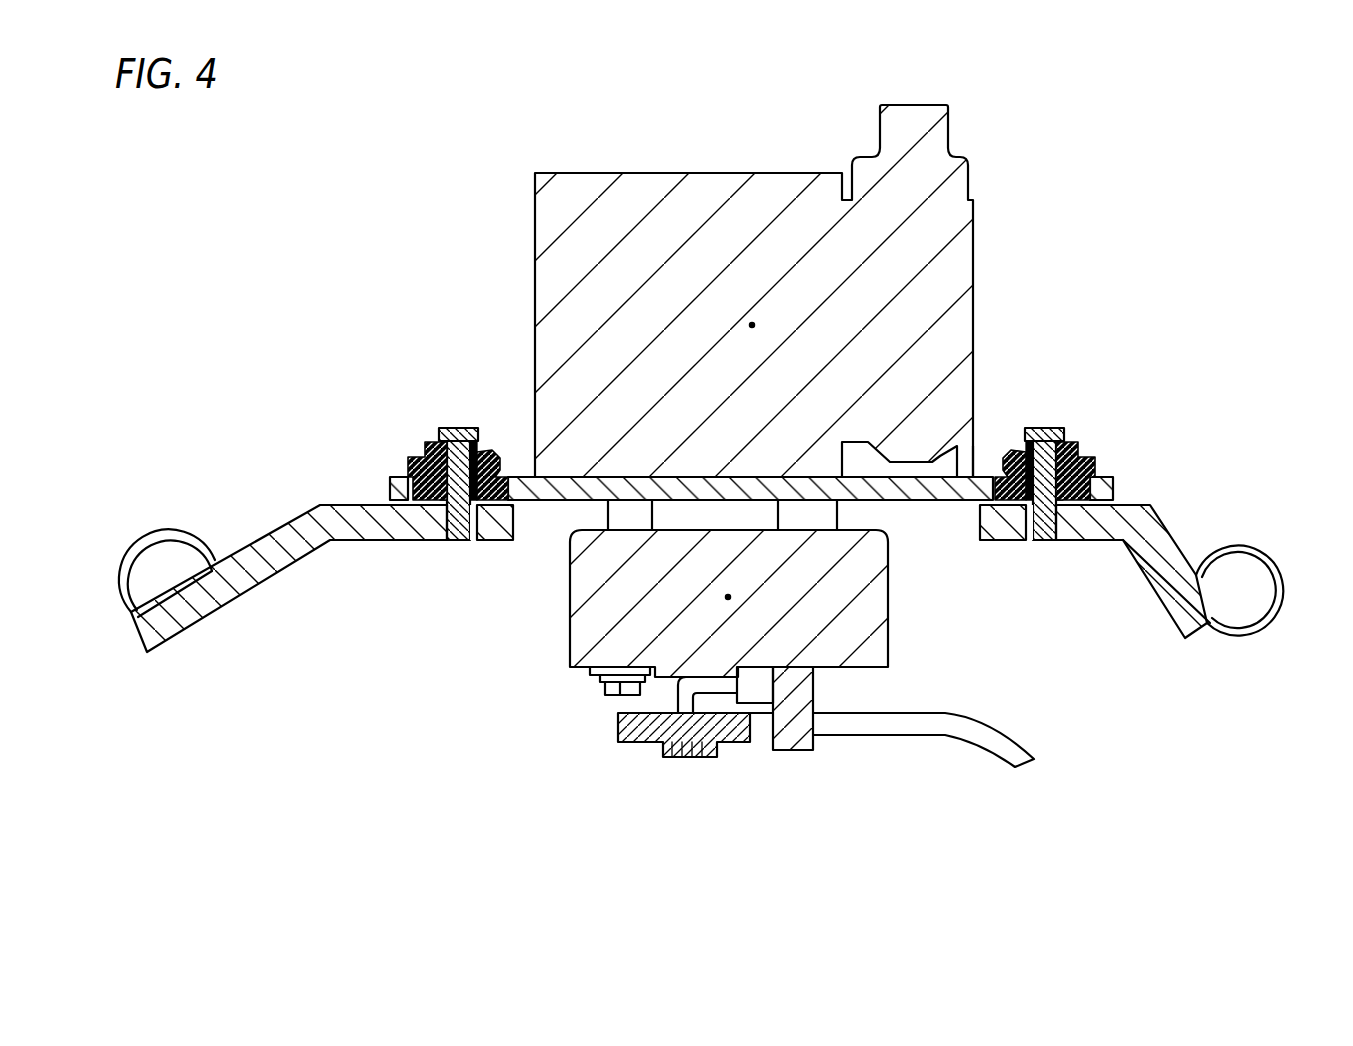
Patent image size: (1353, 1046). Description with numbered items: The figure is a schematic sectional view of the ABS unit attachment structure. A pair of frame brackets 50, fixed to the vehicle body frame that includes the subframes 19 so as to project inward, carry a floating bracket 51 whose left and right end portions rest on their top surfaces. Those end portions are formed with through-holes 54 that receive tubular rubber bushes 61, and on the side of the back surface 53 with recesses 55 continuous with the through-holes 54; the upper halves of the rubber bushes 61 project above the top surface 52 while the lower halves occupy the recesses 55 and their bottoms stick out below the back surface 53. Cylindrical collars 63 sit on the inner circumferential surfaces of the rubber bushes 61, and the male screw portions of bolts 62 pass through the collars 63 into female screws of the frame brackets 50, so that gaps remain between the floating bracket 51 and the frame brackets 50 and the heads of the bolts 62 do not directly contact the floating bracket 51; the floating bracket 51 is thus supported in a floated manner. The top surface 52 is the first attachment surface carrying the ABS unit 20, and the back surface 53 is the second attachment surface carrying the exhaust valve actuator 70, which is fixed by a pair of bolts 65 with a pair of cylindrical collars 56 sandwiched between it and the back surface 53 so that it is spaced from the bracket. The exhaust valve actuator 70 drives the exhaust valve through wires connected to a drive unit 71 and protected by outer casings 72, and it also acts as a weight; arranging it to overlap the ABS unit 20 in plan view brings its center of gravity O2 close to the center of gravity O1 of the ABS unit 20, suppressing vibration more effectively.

The subframe 19 is at (155, 535).
The ABS unit 20 is at (781, 160).
The frame bracket 50 is at (264, 537).
The floating bracket 51 is at (695, 485).
The top surface 52 is at (956, 477).
The back surface 53 is at (918, 504).
The through-hole 54 is at (495, 447).
The recess 55 is at (500, 508).
The cylindrical collar 56 is at (640, 520).
The rubber bush 61 is at (418, 457).
The bolt 62 is at (457, 428).
The cylindrical collar 63 is at (487, 440).
The bolt 65 is at (611, 697).
The exhaust valve actuator 70 is at (582, 740).
The drive unit 71 is at (650, 757).
The outer casing 72 is at (995, 728).
The center of gravity of the ABS unit O1 is at (755, 322).
The center of gravity of the exhaust valve actuator O2 is at (729, 596).